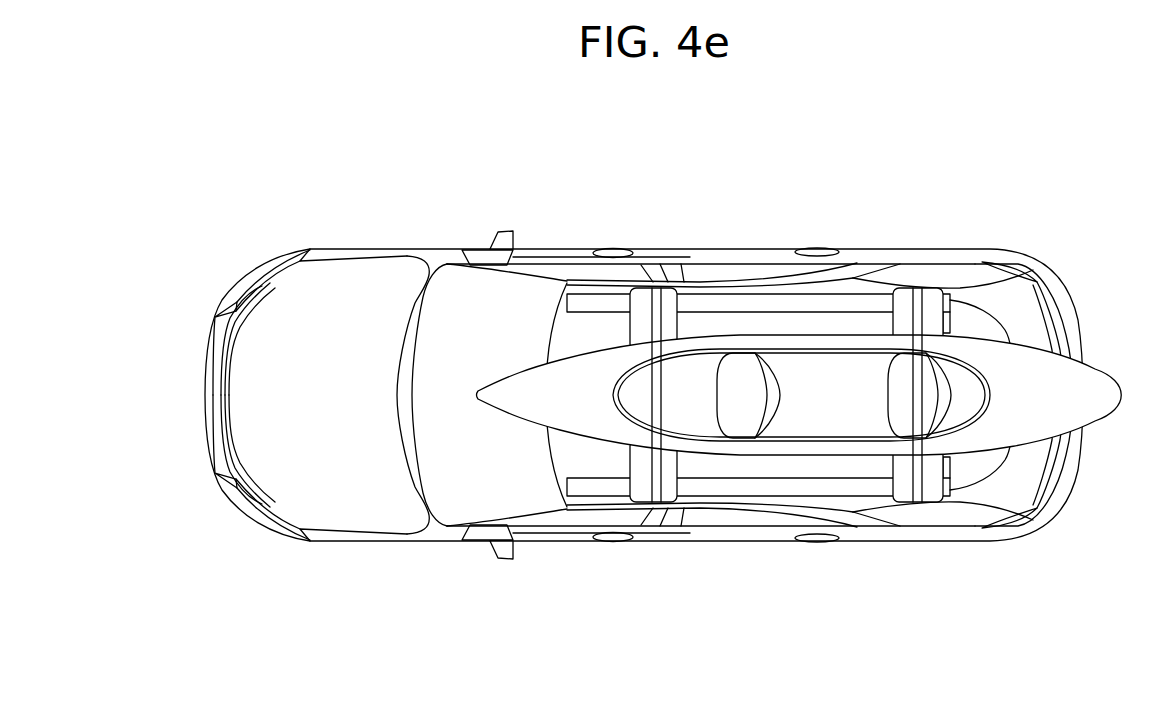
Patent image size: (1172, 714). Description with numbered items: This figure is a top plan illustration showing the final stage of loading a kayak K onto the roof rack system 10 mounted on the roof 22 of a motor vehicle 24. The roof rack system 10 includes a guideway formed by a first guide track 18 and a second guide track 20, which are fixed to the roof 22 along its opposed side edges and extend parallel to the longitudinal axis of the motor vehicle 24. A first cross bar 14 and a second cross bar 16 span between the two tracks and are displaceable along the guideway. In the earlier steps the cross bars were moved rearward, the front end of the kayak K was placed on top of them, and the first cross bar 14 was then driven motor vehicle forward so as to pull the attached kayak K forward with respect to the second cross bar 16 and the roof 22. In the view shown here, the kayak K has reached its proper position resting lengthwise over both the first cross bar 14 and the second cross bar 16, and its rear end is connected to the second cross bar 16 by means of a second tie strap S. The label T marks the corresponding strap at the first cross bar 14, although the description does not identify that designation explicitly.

The roof rack system 10 is at (328, 190).
The first cross bar 14 is at (637, 466).
The second cross bar 16 is at (930, 490).
The first guide track 18 is at (725, 303).
The second guide track 20 is at (762, 487).
The roof 22 is at (718, 470).
The motor vehicle 24 is at (428, 542).
The crossbar T is at (652, 318).
The second tie strap S is at (913, 310).
The kayak K is at (1093, 385).